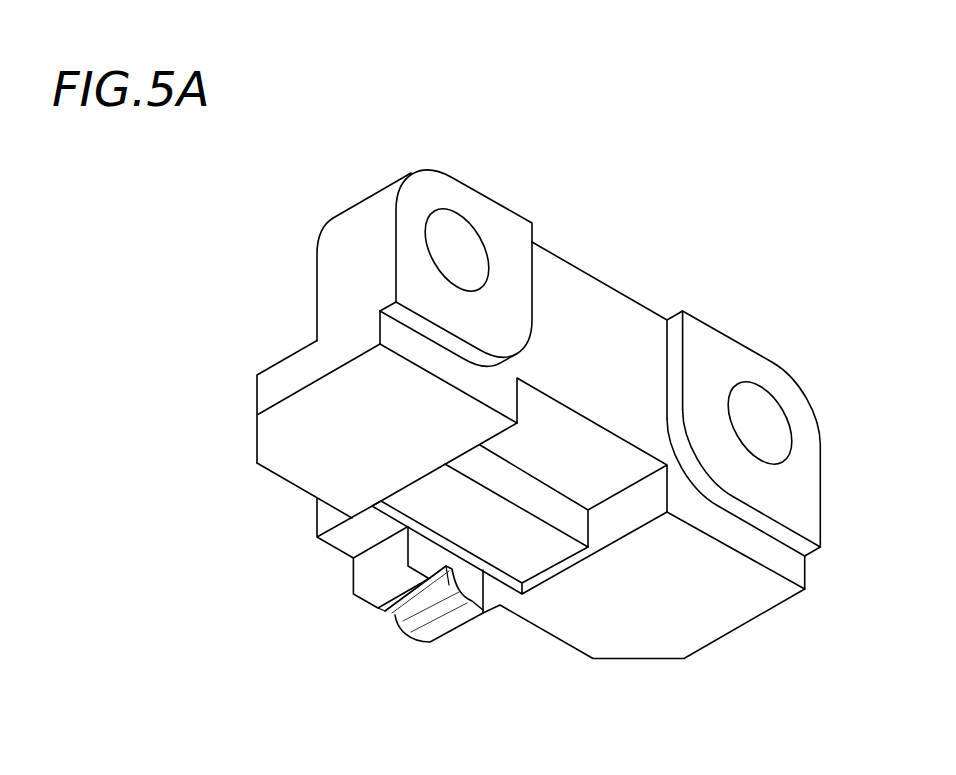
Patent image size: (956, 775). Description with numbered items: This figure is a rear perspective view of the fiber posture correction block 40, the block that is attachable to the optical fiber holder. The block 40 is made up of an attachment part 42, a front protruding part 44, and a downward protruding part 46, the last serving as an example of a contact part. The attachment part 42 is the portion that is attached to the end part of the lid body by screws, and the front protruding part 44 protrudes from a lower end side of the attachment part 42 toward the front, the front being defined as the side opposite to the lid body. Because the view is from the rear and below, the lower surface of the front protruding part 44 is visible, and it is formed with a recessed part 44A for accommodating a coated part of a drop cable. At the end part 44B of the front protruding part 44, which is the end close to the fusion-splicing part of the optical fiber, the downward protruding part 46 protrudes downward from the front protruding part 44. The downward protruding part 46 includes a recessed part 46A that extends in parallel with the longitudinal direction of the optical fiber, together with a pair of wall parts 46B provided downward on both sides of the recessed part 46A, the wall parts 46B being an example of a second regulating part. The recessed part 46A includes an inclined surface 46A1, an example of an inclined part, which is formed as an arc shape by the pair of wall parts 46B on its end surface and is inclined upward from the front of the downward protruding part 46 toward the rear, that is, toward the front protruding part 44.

The block 40 is at (600, 222).
The attachment part 42 is at (602, 318).
The front protruding part 44 is at (667, 617).
The recessed part 44A is at (520, 545).
The end part 44B is at (328, 547).
The downward protruding part 46 is at (445, 640).
The recessed part 46A is at (400, 619).
The inclined surface 46A1 is at (397, 614).
The wall parts 46B is at (363, 603).